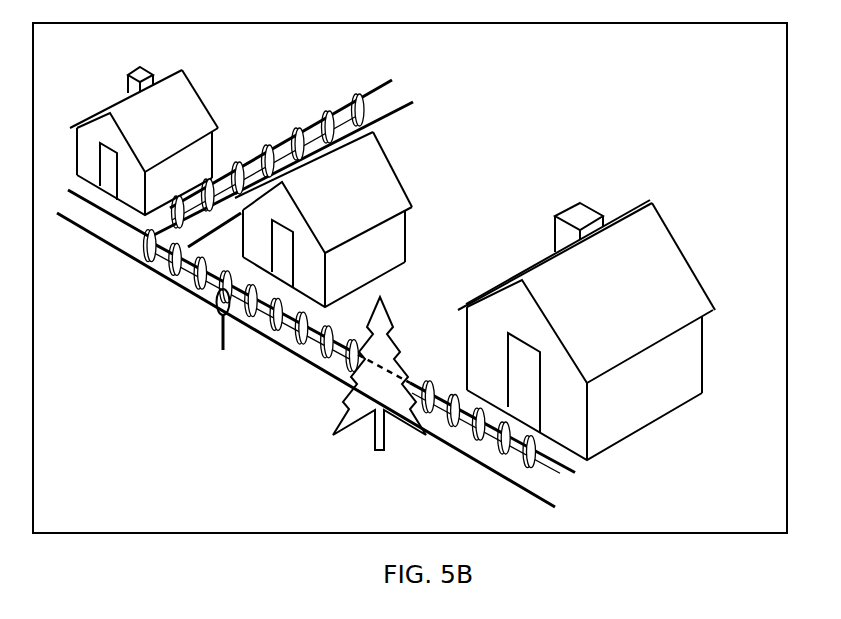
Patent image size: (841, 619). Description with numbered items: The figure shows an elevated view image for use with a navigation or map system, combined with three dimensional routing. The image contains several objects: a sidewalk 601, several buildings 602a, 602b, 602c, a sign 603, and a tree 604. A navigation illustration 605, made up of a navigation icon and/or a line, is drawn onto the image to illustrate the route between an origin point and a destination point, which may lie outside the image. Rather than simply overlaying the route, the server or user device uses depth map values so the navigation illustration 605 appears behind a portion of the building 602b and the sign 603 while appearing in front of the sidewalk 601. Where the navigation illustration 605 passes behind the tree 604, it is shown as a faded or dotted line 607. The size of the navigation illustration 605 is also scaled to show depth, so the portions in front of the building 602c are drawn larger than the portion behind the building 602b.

The sidewalk 601 is at (413, 102).
The building 602a is at (101, 110).
The building 602b is at (412, 206).
The building 602c is at (652, 203).
The sign 603 is at (221, 337).
The tree 604 is at (393, 327).
The navigation illustration 605 is at (298, 131).
The dotted line 607 is at (373, 371).